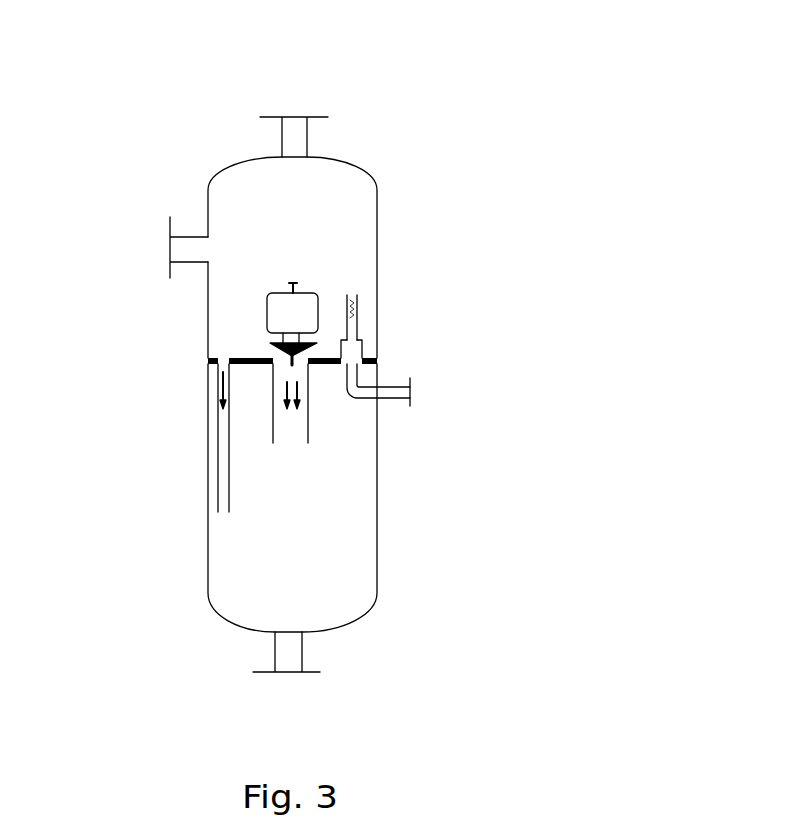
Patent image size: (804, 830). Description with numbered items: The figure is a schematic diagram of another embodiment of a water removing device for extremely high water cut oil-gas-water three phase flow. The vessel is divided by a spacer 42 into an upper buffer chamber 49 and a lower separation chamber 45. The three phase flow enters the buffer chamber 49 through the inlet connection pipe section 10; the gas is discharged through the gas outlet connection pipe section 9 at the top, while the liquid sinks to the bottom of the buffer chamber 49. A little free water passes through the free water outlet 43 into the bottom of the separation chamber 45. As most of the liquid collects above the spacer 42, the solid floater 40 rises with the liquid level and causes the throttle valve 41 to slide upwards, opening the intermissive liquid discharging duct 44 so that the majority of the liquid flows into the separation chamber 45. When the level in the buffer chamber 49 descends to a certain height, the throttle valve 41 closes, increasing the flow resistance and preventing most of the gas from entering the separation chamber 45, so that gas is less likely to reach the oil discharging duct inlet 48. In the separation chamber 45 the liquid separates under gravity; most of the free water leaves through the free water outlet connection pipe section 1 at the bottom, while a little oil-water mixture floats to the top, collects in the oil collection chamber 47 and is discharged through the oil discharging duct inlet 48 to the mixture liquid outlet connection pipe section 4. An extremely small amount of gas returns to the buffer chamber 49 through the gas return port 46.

The free water outlet connection pipe section 1 is at (303, 672).
The mixture liquid outlet connection pipe section 4 is at (410, 392).
The gas outlet connection pipe section 9 is at (306, 138).
The inlet connection pipe section 10 is at (170, 250).
The solid floater 40 is at (282, 315).
The throttle valve 41 is at (268, 345).
The spacer 42 is at (245, 363).
The free water outlet 43 is at (225, 417).
The intermissive liquid discharging duct 44 is at (273, 422).
The separation chamber 45 is at (288, 517).
The gas return port 46 is at (353, 293).
The oil collection chamber 47 is at (363, 343).
The oil discharging duct inlet 48 is at (350, 365).
The buffer chamber 49 is at (287, 223).